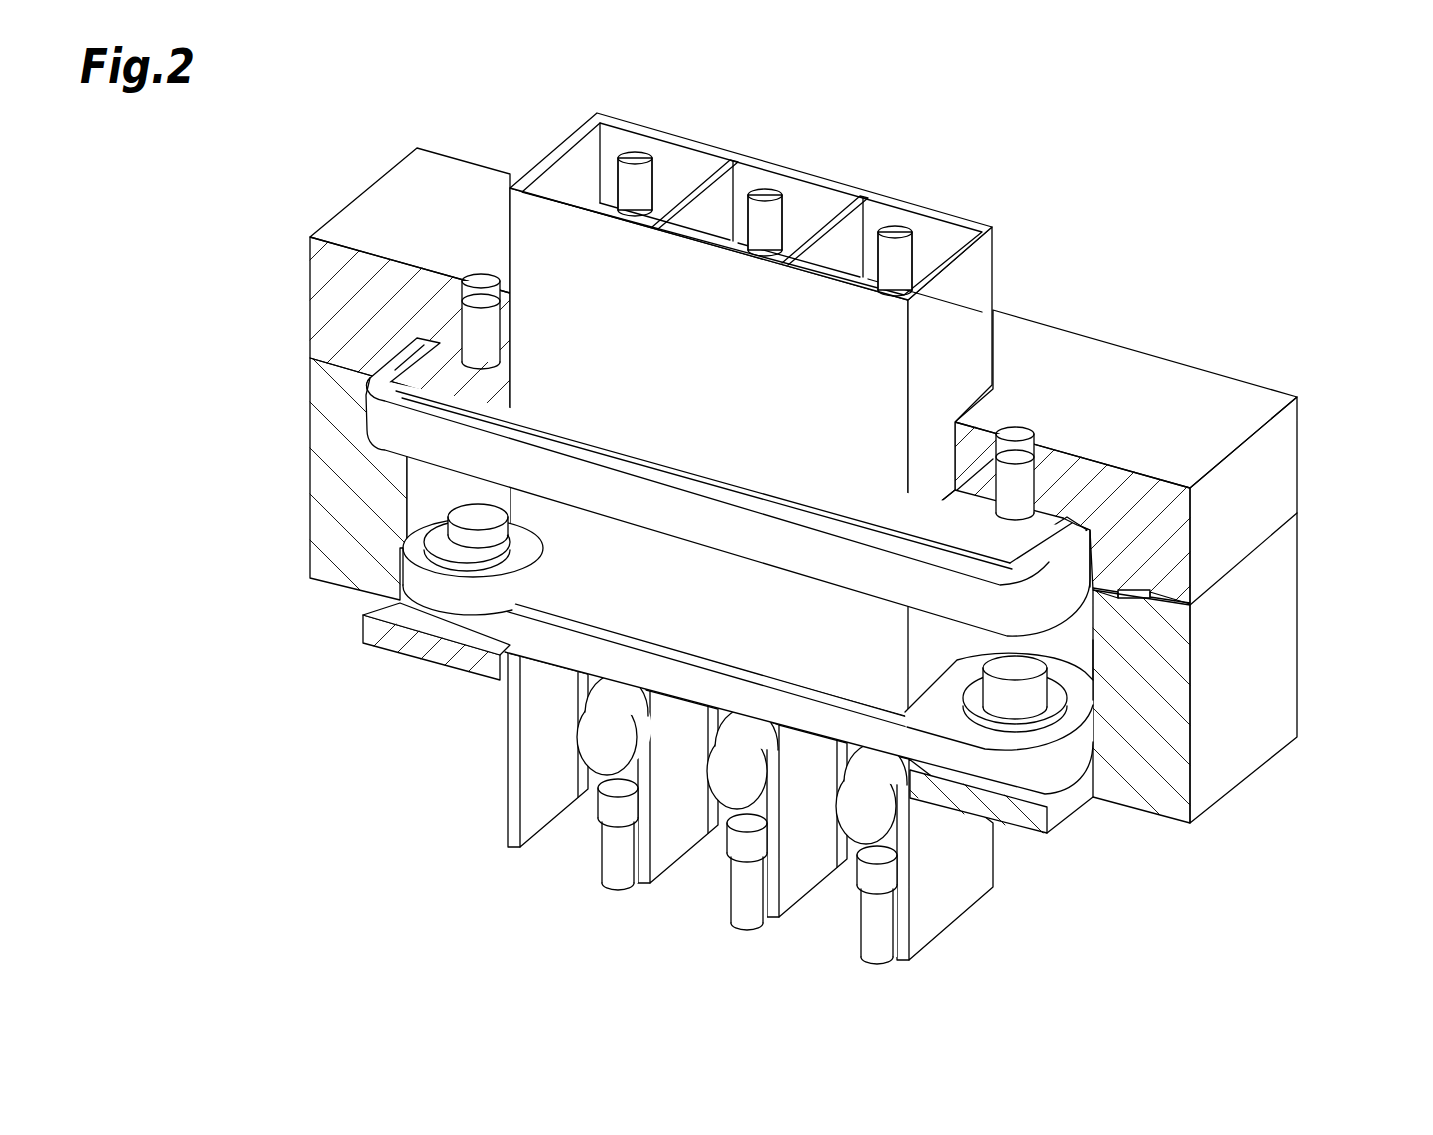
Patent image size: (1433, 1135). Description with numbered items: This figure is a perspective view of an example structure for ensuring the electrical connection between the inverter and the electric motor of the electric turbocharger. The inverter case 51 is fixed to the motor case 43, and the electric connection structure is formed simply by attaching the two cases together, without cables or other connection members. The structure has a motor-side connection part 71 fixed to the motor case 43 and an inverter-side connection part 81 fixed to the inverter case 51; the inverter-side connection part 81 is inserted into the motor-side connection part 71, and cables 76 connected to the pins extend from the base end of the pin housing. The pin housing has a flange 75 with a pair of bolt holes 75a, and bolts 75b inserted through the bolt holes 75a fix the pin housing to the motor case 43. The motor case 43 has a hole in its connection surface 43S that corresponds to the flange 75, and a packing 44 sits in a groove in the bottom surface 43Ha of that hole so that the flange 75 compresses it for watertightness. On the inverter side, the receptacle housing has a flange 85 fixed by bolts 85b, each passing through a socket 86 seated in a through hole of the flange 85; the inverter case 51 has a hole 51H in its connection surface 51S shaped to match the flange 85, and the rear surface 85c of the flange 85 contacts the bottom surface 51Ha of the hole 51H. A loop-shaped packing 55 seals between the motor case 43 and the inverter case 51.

The motor case 43 is at (312, 290).
The inverter case 51 is at (312, 500).
The connection surface 43S is at (1150, 578).
The connection surface 51S is at (1155, 600).
The bottom surface 43Ha is at (1135, 495).
The motor-side connection part 71 is at (962, 215).
The cables 76 is at (637, 158).
The inverter-side connection part 81 is at (507, 753).
The flange 75 is at (366, 410).
The bolt holes 75a is at (472, 288).
The bolts 75b is at (480, 305).
The packing 44 is at (1090, 535).
The flange 85 is at (403, 580).
The bolts 85b is at (472, 560).
The rear surface 85c is at (400, 648).
The socket 86 is at (1040, 735).
The packing 55 is at (1140, 630).
The hole 51H is at (1095, 690).
The bottom surface 51Ha is at (1030, 840).